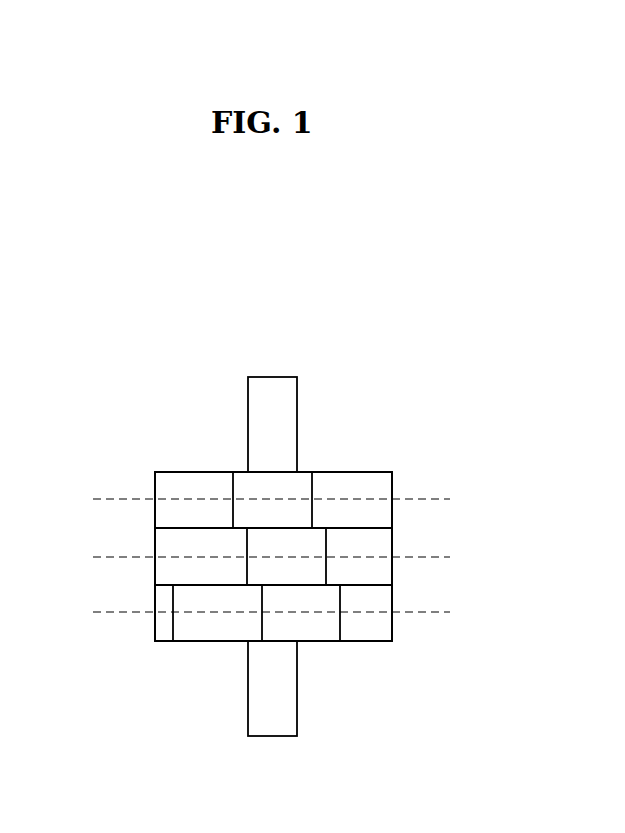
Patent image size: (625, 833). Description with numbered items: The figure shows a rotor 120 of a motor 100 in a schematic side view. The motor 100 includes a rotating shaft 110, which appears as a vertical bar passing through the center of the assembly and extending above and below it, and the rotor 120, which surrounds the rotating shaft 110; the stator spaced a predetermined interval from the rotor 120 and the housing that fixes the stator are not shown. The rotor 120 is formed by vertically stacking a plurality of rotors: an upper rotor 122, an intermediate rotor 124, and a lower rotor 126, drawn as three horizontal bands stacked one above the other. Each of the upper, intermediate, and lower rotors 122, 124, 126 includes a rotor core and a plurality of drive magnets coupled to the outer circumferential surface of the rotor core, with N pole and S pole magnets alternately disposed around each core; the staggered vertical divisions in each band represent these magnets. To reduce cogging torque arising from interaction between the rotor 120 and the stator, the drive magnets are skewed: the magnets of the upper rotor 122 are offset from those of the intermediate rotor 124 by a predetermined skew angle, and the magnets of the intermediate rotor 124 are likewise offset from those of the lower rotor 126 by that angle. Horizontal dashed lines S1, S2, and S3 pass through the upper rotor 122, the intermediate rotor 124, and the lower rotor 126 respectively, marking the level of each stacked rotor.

The motor 100 is at (374, 295).
The rotating shaft 110 is at (271, 385).
The rotor 120 is at (366, 463).
The upper rotor 122 is at (155, 482).
The intermediate rotor 124 is at (155, 535).
The lower rotor 126 is at (155, 622).
The first section line S1 is at (436, 497).
The second section line S2 is at (436, 556).
The third section line S3 is at (436, 611).